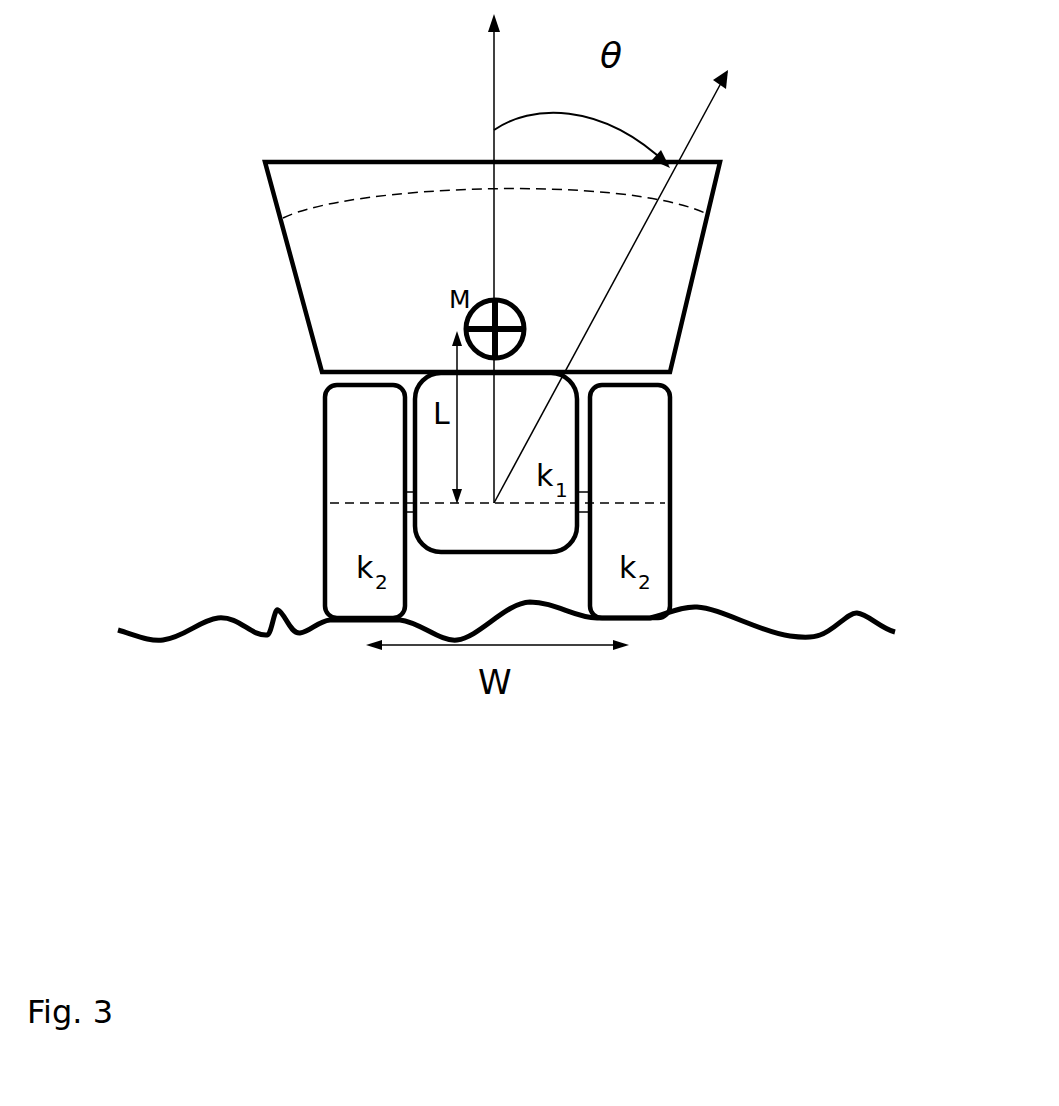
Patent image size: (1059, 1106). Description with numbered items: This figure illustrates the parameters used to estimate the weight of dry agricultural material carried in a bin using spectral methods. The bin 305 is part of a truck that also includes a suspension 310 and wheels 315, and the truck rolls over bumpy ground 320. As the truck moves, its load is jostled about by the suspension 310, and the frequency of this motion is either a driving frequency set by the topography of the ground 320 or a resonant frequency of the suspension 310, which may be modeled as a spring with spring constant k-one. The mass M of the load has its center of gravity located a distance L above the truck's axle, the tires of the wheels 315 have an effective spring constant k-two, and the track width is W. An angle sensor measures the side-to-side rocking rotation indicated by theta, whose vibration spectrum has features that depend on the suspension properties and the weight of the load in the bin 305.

The bin 305 is at (492, 267).
The suspension 310 is at (496, 462).
The wheels 315 is at (497, 501).
The bumpy ground 320 is at (730, 620).